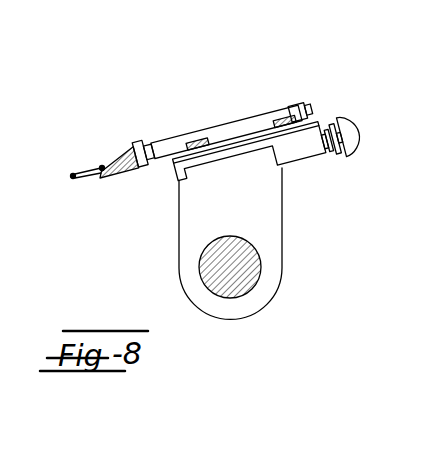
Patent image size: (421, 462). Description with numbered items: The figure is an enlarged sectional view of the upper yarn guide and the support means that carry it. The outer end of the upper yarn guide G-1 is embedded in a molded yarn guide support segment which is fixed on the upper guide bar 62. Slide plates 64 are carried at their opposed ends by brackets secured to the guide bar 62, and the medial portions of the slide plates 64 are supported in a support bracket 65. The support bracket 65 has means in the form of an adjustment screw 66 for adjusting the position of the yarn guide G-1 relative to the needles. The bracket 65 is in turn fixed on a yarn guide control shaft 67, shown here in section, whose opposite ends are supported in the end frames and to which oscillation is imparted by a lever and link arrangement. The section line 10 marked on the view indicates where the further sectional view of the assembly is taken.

The section line 10- 10 is at (52, 145).
The upper guide bar 62 is at (135, 122).
The upper yarn guide G-1 is at (78, 180).
The slide plate 64 is at (283, 122).
The support bracket 65 is at (268, 210).
The adjustment screw 66 is at (333, 138).
The yarn guide control shaft 67 is at (250, 268).